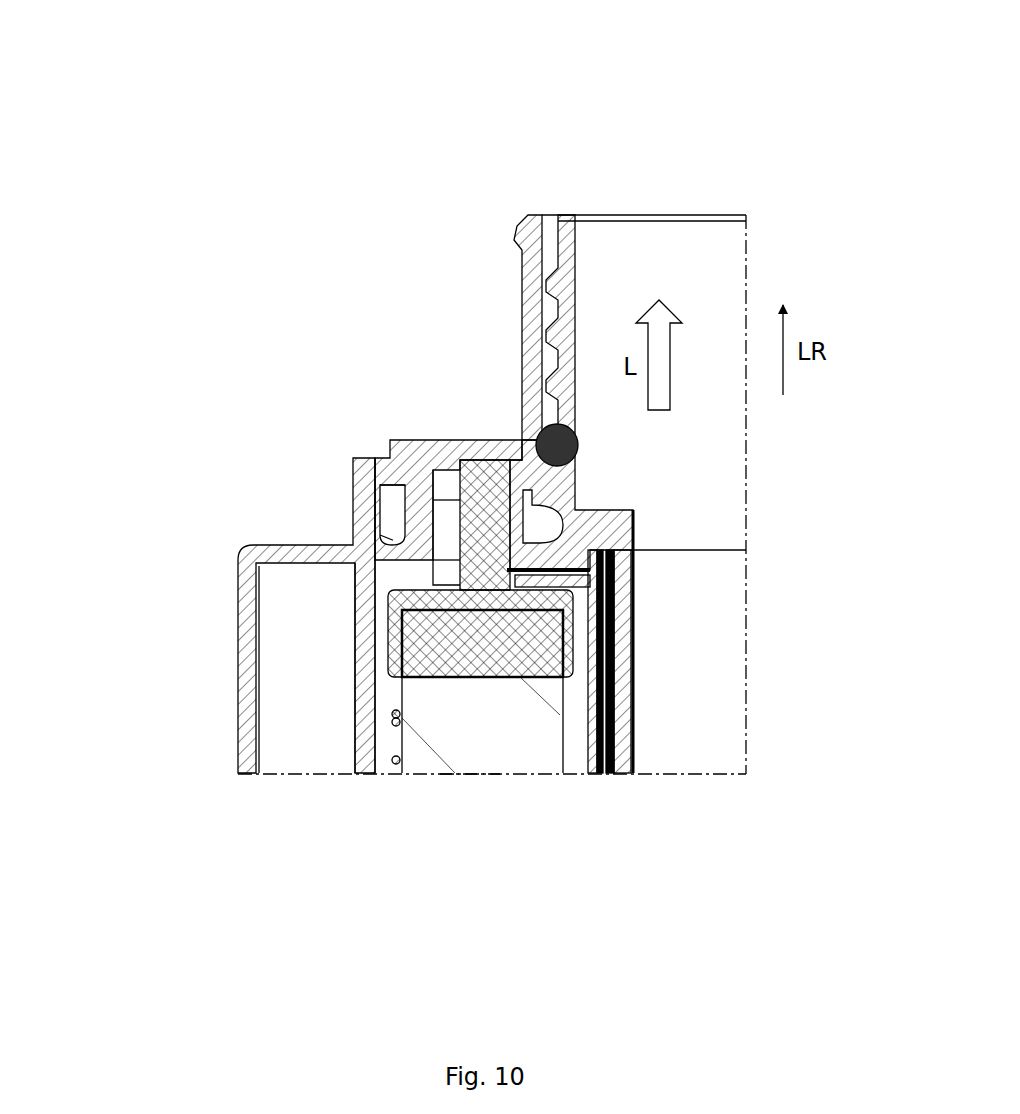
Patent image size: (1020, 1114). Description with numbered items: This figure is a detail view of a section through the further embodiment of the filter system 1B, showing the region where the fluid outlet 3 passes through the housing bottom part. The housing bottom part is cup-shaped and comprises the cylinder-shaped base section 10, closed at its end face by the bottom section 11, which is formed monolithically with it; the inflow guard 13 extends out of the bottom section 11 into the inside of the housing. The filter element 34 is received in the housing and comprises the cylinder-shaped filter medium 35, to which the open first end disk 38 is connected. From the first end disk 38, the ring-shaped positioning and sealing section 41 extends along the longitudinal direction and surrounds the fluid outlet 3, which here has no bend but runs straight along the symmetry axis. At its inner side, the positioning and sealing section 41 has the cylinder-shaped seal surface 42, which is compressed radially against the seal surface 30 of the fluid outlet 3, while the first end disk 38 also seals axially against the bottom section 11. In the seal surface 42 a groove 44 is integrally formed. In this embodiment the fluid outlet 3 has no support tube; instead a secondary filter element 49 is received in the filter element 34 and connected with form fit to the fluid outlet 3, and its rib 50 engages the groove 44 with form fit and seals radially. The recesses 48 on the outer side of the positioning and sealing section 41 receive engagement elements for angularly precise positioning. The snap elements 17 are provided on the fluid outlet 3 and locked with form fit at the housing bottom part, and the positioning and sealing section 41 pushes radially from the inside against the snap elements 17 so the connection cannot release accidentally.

The filter system 1B is at (471, 74).
The fluid outlet 3 is at (521, 250).
The base section 10 is at (237, 688).
The bottom section 11 is at (373, 457).
The inflow guard 13 is at (355, 750).
The snap elements 17 is at (410, 532).
The seal surface 30 is at (520, 487).
The filter element 34 is at (469, 781).
The filter medium 35 is at (517, 738).
The first end disk 38 is at (384, 622).
The positioning and sealing section 41 is at (483, 440).
The seal surface 42 is at (480, 487).
The groove 44 is at (497, 560).
The recesses 48 is at (455, 520).
The secondary filter element 49 is at (640, 708).
The rib 50 is at (500, 557).